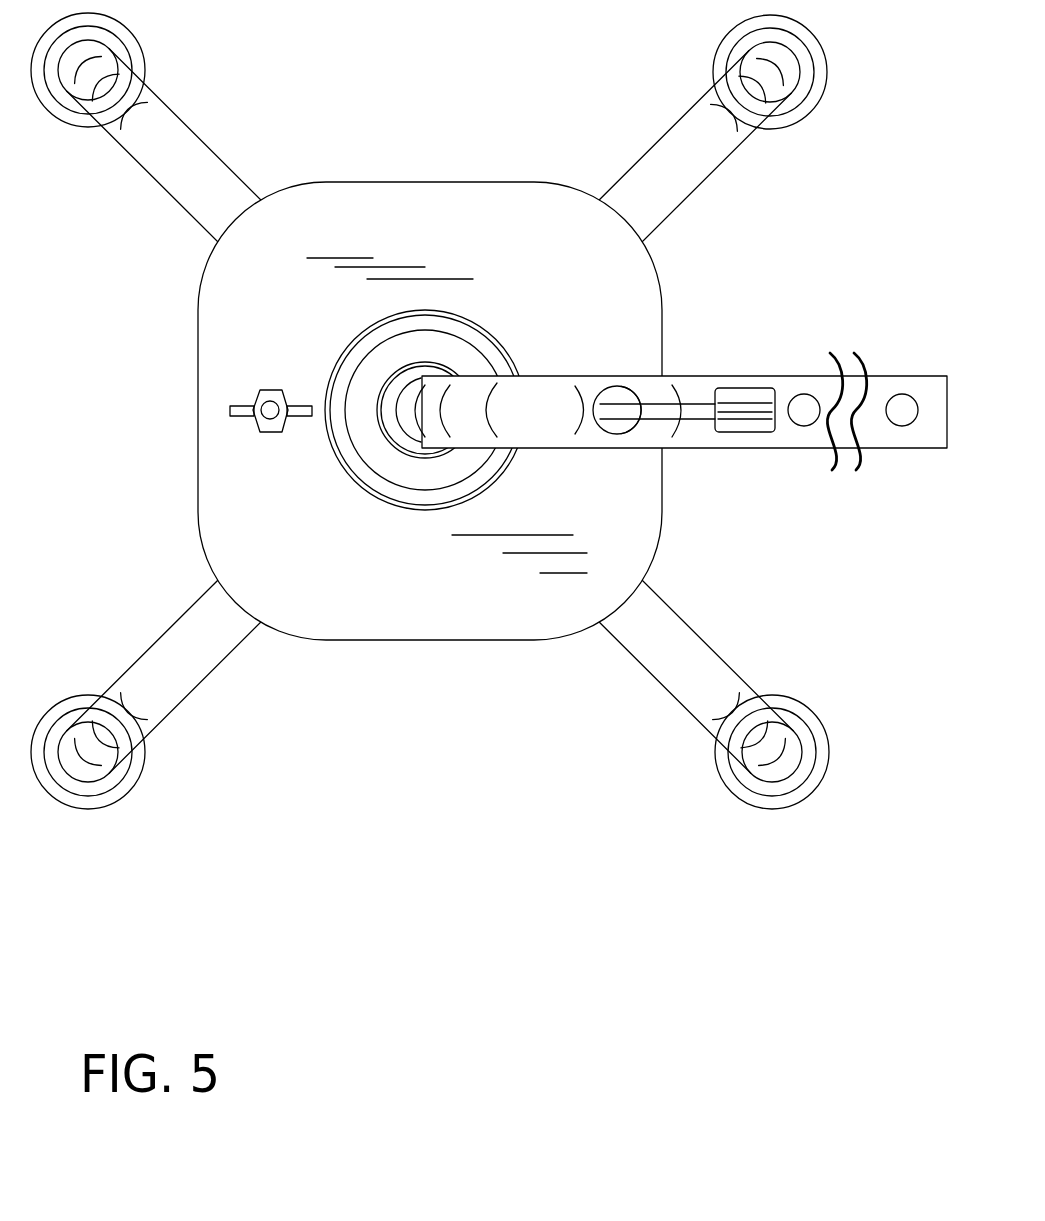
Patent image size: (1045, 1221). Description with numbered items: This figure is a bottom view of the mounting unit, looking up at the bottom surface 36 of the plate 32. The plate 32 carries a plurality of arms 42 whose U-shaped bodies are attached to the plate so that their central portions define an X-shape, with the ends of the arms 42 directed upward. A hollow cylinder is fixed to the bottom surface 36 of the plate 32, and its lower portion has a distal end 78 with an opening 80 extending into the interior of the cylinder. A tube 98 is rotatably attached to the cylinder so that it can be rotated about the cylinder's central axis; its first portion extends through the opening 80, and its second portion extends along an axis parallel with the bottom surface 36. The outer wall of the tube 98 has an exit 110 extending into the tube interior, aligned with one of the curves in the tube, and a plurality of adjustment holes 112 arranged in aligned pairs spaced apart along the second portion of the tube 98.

The plate 32 is at (398, 182).
The bottom surface 36 is at (466, 224).
The arms 42 is at (172, 190).
The distal end 78 is at (392, 352).
The opening 80 is at (392, 413).
The tube 98 is at (688, 376).
The exit 110 is at (600, 430).
The adjustment holes 112 is at (900, 400).